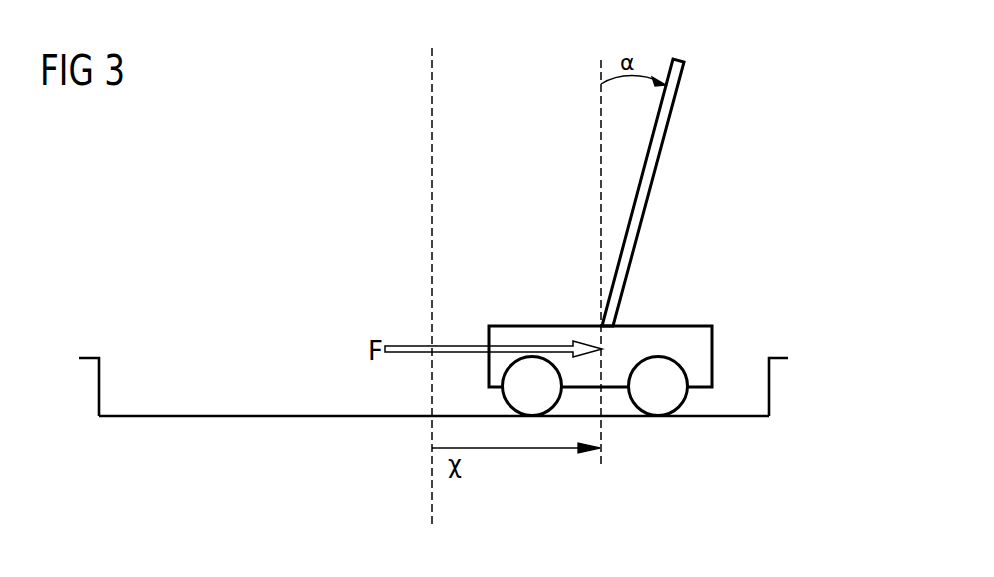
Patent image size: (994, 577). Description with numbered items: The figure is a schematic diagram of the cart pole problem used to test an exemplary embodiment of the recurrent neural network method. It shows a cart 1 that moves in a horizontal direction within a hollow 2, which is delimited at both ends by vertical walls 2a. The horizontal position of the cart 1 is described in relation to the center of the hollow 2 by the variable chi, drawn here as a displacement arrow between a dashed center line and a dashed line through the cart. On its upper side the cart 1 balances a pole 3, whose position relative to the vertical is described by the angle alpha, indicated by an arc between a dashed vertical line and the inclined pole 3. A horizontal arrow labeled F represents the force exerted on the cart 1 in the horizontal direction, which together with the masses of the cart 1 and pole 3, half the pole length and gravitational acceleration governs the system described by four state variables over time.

The cart 1 is at (672, 326).
The hollow 2 is at (208, 378).
The vertical walls 2a is at (99, 390).
The pole 3 is at (652, 192).